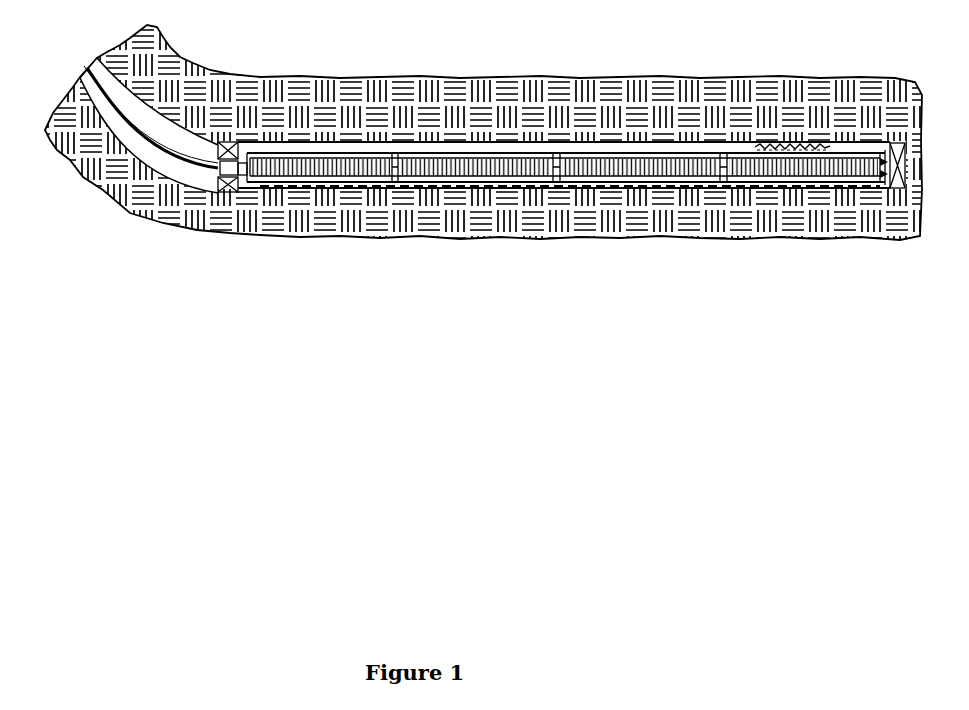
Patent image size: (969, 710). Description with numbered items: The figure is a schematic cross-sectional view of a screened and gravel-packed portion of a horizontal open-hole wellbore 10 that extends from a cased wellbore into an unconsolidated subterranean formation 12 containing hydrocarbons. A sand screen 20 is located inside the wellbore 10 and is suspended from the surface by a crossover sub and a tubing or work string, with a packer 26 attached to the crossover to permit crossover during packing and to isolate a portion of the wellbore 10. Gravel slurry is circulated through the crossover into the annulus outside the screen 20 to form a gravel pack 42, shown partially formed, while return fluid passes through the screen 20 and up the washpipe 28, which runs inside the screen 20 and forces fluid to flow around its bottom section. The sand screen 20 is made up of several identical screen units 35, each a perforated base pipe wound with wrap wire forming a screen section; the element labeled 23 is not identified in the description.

The wellbore 10 is at (471, 145).
The unconsolidated subterranean formation 12 is at (727, 204).
The sand screen 20 is at (594, 143).
The inner liner 23 is at (702, 143).
The packer 26 is at (228, 138).
The washpipe 28 is at (138, 155).
The screen units 35 is at (434, 170).
The gravel pack 42 is at (755, 147).